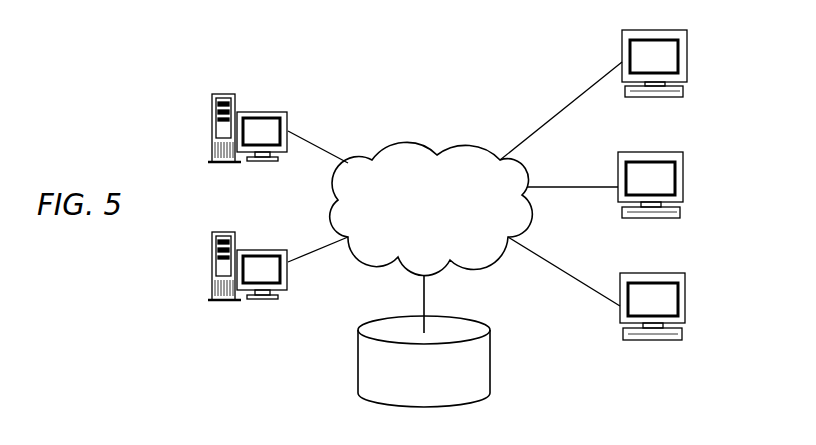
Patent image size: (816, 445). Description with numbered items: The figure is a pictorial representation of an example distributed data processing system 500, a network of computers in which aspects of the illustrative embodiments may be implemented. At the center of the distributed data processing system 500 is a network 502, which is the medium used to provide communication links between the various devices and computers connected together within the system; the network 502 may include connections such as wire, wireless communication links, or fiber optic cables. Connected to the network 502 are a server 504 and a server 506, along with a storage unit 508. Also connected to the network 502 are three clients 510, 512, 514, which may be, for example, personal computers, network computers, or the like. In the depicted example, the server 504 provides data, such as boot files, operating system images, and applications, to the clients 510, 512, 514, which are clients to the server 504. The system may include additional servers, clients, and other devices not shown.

The distributed data processing system 500 is at (500, 74).
The network 502 is at (413, 142).
The server 504 is at (212, 130).
The server 506 is at (212, 268).
The storage unit 508 is at (358, 360).
The client 510 is at (687, 62).
The client 512 is at (683, 185).
The client 514 is at (685, 308).